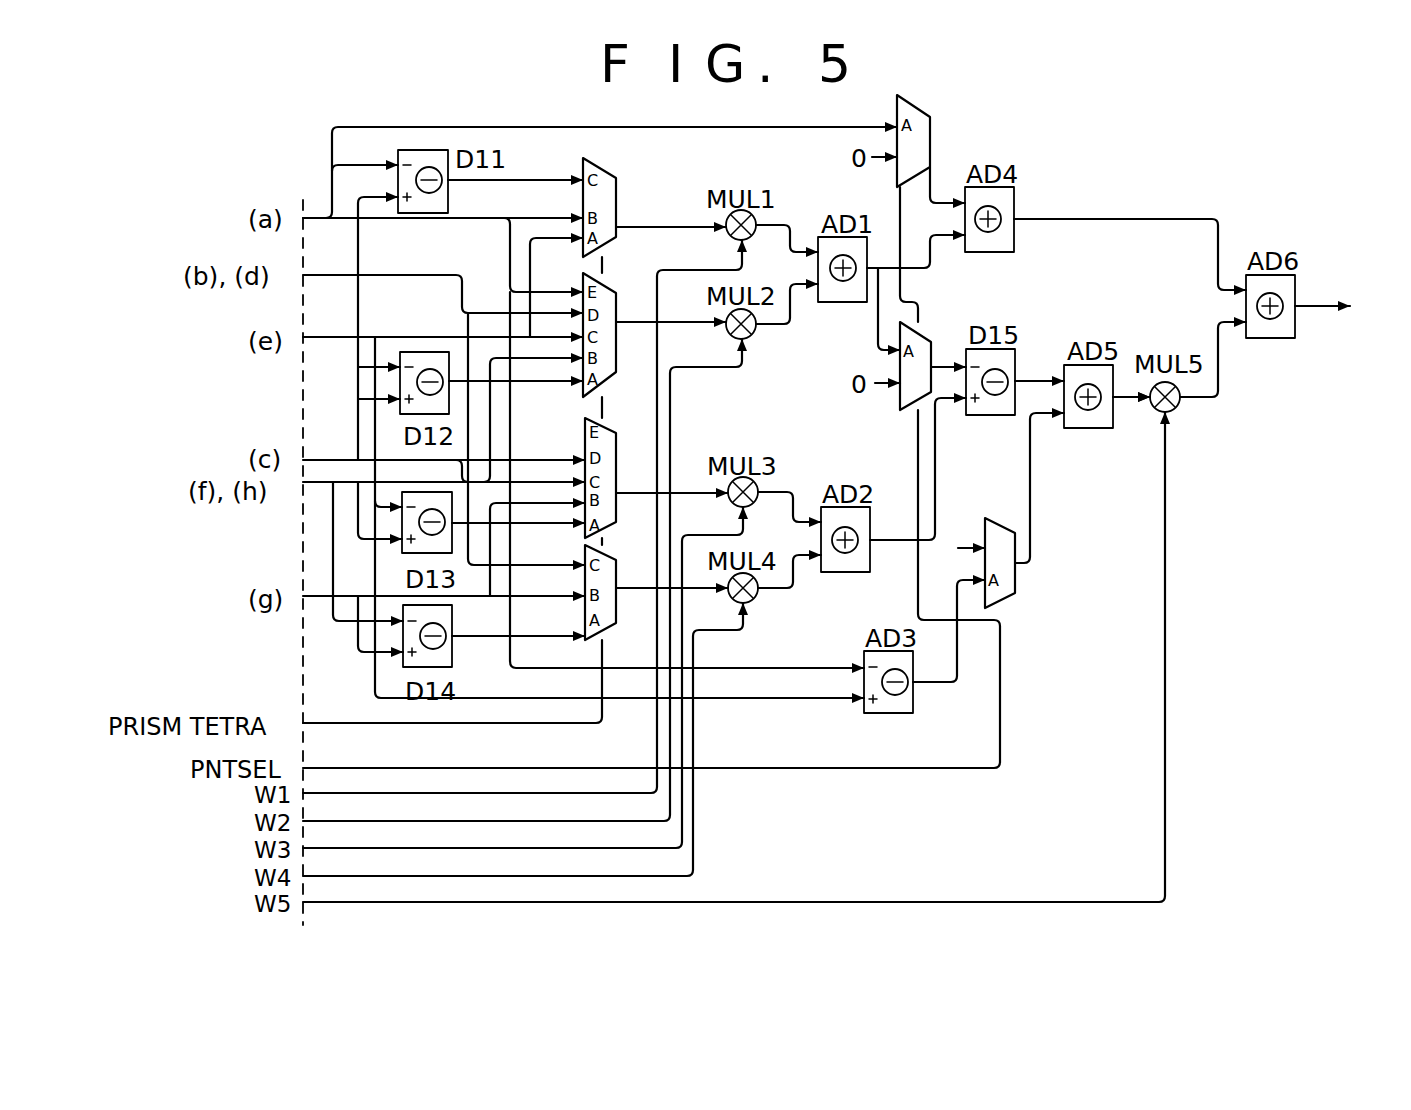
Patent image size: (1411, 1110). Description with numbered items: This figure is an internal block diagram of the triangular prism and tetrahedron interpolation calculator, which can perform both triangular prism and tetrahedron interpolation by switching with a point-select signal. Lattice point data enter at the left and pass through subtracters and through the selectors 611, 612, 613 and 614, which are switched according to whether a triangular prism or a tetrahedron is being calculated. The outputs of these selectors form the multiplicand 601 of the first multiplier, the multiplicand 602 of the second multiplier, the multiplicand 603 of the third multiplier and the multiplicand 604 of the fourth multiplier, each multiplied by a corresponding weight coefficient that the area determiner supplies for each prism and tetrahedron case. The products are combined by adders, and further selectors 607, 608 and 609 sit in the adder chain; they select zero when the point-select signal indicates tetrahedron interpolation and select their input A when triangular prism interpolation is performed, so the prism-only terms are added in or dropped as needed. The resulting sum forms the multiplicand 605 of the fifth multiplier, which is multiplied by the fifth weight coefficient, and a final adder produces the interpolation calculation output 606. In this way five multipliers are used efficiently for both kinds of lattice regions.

The multiplicand of multiplier MUL1 601 is at (630, 223).
The multiplicand of multiplier MUL2 602 is at (630, 320).
The multiplicand of multiplier MUL3 603 is at (625, 490).
The multiplicand of multiplier MUL4 604 is at (625, 585).
The multiplicand of multiplier MUL5 605 is at (1133, 398).
The interpolation calculation output 606 is at (1353, 308).
The selector 607 is at (934, 133).
The selector 608 is at (924, 337).
The selector 609 is at (1003, 518).
The selector 611 is at (597, 166).
The selector 612 is at (614, 370).
The selector 613 is at (606, 430).
The selector 614 is at (617, 600).